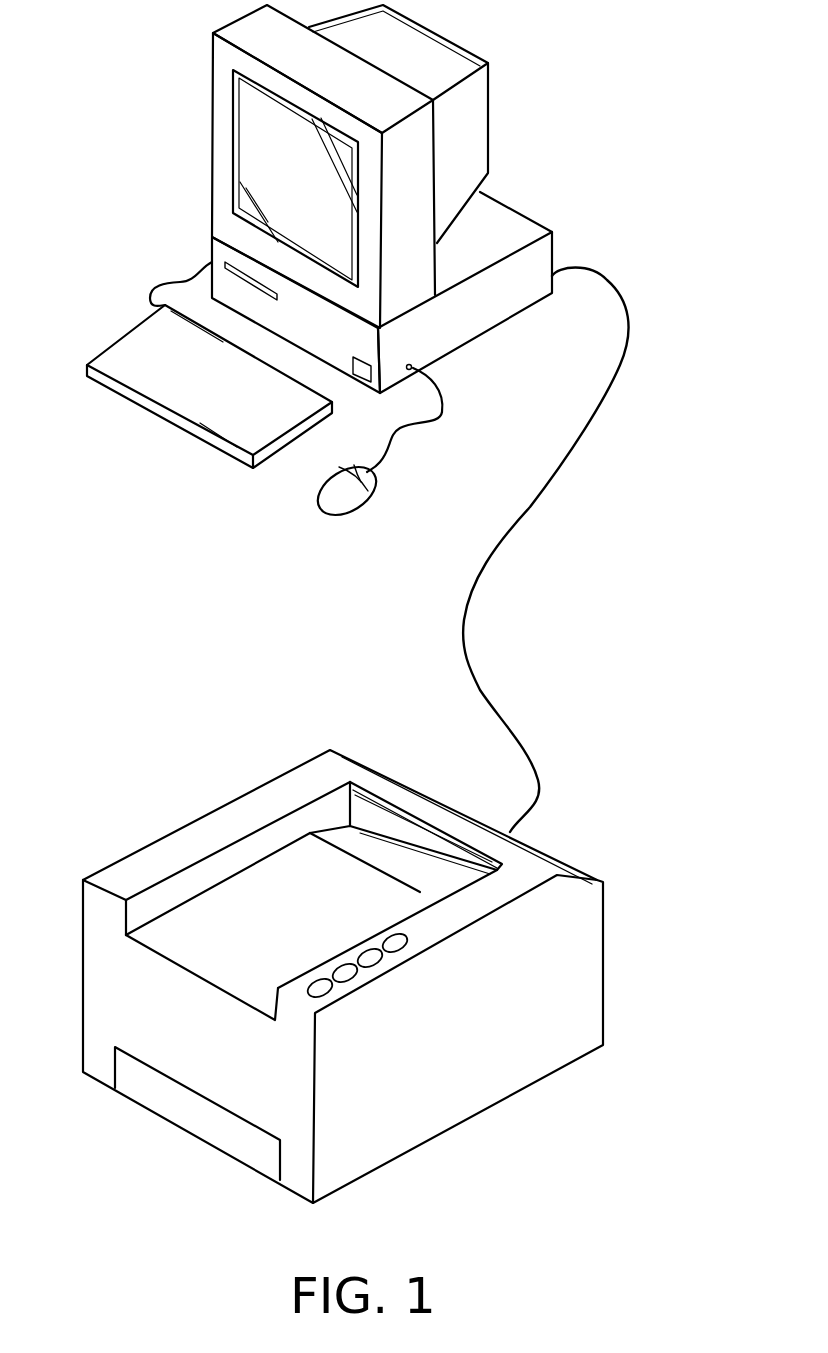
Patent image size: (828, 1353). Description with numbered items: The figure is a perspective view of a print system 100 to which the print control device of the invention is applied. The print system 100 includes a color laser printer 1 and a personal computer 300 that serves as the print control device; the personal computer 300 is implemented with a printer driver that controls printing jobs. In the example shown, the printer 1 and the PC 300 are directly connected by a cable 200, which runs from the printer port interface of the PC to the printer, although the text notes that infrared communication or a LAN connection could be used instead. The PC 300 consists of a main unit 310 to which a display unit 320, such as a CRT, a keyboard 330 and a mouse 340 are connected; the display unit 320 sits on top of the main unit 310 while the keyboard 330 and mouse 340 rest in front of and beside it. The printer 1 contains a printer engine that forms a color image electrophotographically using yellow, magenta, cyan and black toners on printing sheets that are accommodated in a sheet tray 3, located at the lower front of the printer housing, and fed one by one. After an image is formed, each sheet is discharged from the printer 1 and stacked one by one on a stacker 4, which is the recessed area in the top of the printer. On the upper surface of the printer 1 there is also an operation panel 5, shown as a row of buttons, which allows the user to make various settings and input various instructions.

The print system 100 is at (373, 604).
The personal computer 300 is at (333, 276).
The main unit 310 is at (475, 318).
The display unit 320 is at (222, 103).
The keyboard 330 is at (144, 379).
The mouse 340 is at (345, 493).
The cable 200 is at (502, 542).
The color laser printer 1 is at (381, 973).
The sheet tray 3 is at (165, 1103).
The stacker 4 is at (380, 855).
The operation panel 5 is at (332, 942).